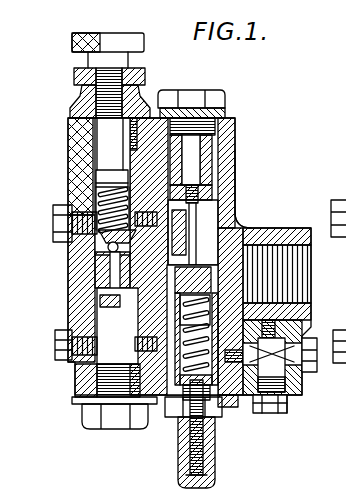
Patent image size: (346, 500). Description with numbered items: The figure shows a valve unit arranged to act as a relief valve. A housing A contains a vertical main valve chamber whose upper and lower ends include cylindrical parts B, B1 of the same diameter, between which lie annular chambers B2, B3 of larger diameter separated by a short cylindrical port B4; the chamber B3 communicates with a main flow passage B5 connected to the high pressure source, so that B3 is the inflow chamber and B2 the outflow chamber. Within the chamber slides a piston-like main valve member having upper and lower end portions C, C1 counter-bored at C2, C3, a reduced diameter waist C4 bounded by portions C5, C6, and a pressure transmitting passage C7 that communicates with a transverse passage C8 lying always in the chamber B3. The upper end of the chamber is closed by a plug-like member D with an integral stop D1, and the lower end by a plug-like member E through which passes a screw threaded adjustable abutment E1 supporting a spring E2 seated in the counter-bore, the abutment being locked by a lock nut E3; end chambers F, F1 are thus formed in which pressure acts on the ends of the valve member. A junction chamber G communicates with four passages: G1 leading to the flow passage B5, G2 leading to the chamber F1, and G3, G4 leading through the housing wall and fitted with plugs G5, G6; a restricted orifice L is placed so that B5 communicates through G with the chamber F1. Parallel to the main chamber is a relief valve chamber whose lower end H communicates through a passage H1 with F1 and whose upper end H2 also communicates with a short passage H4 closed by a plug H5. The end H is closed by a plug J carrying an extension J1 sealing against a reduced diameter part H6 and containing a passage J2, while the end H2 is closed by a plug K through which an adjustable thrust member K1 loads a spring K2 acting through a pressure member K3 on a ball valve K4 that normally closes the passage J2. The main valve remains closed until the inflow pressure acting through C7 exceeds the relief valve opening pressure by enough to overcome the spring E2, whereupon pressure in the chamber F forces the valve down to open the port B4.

The housing A is at (230, 122).
The upper cylindrical part of main valve chamber B is at (238, 158).
The lower cylindrical part of main valve chamber B1 is at (176, 300).
The annular chamber B2 is at (238, 205).
The annular chamber B3 is at (175, 268).
The port B4 is at (240, 238).
The main flow passage B5 is at (300, 293).
The upper end portion of main valve member C is at (238, 135).
The lower end portion of main valve member C1 is at (176, 320).
The counter-bore C2 is at (226, 95).
The counter-bore C3 is at (290, 235).
The reduced diameter portion C4 is at (236, 215).
The bounding portion C5 is at (238, 180).
The bounding portion C6 is at (172, 240).
The pressure transmitting passage C7 is at (250, 222).
The transverse passage C8 is at (265, 232).
The plug-like member D is at (184, 105).
The stop D1 is at (196, 110).
The plug-like member E is at (213, 438).
The adjustable abutment E1 is at (209, 446).
The spring E2 is at (194, 412).
The lock nut E3 is at (214, 472).
The end chamber F is at (168, 108).
The end chamber F1 is at (228, 407).
The junction chamber G is at (292, 392).
The passage G1 is at (310, 313).
The passage G2 is at (262, 410).
The passage G3 is at (302, 380).
The passage G4 is at (284, 410).
The plug G5 is at (315, 360).
The plug G6 is at (270, 413).
The lower end of relief valve chamber H is at (55, 350).
The passage H1 is at (165, 415).
The upper end of relief valve chamber H2 is at (72, 136).
The short passage H4 is at (97, 180).
The plug H5 is at (58, 217).
The reduced diameter part H6 is at (108, 258).
The plug J is at (115, 415).
The extension J1 is at (118, 339).
The passage J2 is at (100, 300).
The plug K is at (80, 82).
The adjustable screw threaded thrust member K1 is at (86, 114).
The spring K2 is at (110, 138).
The pressure member K3 is at (100, 240).
The ball valve K4 is at (110, 275).
The restricted orifice L is at (302, 343).